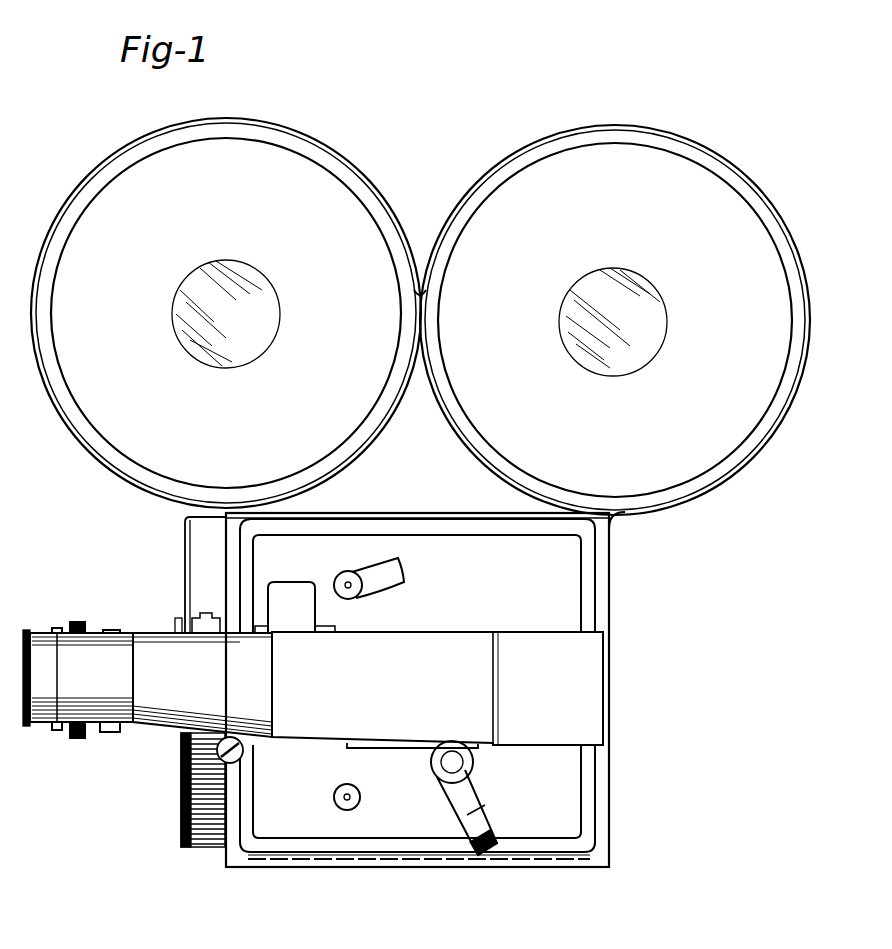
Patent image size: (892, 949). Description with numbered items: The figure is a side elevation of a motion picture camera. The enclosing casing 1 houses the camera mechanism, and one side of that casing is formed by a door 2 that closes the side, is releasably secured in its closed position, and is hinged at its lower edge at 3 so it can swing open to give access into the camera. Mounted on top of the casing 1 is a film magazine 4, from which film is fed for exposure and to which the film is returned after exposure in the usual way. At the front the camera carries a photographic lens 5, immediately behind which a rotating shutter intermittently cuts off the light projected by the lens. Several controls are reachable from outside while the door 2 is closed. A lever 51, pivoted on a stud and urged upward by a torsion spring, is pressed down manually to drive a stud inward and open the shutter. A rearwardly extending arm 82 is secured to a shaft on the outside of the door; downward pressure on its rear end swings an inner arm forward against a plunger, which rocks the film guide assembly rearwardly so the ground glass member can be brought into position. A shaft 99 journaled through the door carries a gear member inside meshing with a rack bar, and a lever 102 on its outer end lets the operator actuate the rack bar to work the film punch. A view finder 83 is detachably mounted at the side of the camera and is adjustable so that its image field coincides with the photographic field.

The enclosing casing 1 is at (232, 545).
The door 2 is at (560, 578).
The hinge 3 is at (552, 860).
The film magazine 4 is at (392, 248).
The photographic lens 5 is at (80, 622).
The lever 51 is at (300, 600).
The rearwardly extending arm 82 is at (405, 570).
The view finder 83 is at (166, 705).
The shaft 99 is at (440, 773).
The lever 102 is at (470, 822).